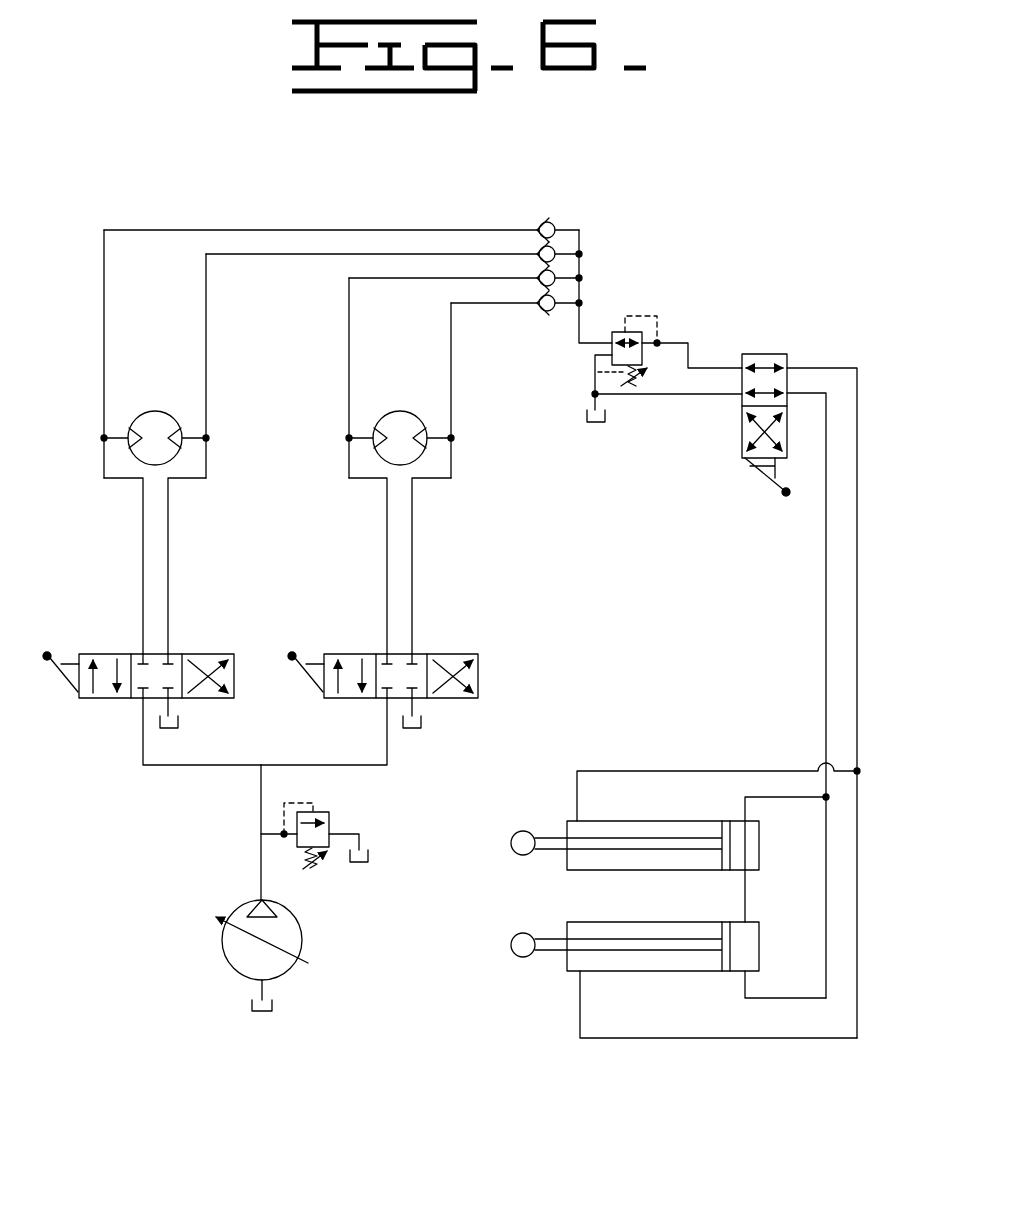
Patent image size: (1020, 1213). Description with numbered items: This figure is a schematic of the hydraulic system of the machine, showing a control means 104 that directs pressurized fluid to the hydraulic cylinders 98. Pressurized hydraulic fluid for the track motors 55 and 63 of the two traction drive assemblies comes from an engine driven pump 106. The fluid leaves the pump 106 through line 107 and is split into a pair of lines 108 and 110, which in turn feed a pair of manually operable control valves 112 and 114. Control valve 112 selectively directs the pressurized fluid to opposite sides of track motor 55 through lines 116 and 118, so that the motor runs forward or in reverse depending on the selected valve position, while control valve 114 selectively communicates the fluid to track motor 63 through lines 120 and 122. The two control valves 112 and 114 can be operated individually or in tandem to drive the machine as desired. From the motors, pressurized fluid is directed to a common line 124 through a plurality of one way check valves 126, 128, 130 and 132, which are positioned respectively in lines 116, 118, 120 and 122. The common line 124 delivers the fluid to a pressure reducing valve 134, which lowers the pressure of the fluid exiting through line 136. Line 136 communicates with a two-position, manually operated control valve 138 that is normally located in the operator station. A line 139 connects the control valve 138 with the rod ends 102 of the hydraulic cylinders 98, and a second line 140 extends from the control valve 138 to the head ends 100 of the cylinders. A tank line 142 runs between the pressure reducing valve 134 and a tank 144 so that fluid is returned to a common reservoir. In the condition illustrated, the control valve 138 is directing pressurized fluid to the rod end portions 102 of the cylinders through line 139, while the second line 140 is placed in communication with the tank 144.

The track motor 55 is at (150, 412).
The track motor 63 is at (398, 412).
The hydraulic cylinders 98 is at (694, 871).
The head ends 100 is at (764, 960).
The rod ends 102 is at (566, 933).
The control means 104 is at (786, 254).
The engine driven pump 106 is at (230, 960).
The line 107 is at (260, 880).
The line 108 is at (197, 766).
The line 110 is at (375, 765).
The manually operable control valve 112 is at (103, 698).
The manually operable control valve 114 is at (480, 680).
The line 116 is at (122, 478).
The line 118 is at (190, 478).
The line 120 is at (367, 478).
The line 122 is at (435, 478).
The common line 124 is at (580, 268).
The one way check valve 126 is at (540, 221).
The one way check valve 128 is at (538, 244).
The one way check valve 130 is at (540, 288).
The one way check valve 132 is at (546, 313).
The pressure reducing valve 134 is at (640, 330).
The line 136 is at (688, 356).
The two-position, manually operated control valve 138 is at (787, 354).
The line 139 is at (857, 462).
The second line 140 is at (826, 656).
The tank line 142 is at (594, 396).
The tank 144 is at (597, 424).